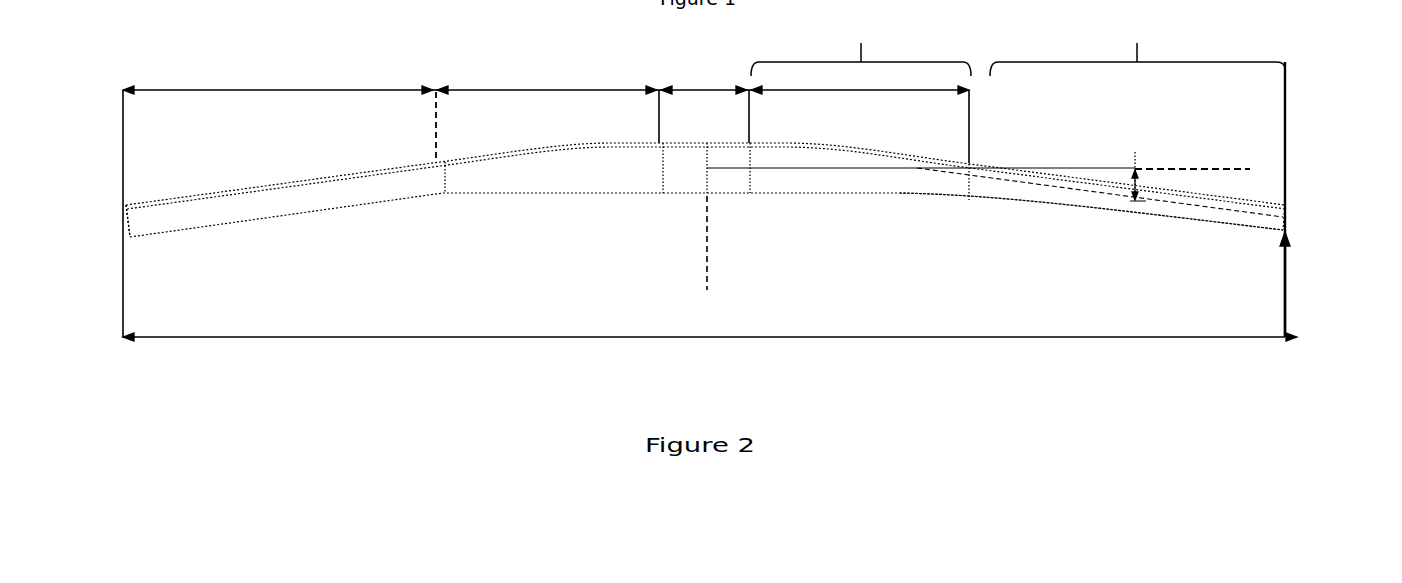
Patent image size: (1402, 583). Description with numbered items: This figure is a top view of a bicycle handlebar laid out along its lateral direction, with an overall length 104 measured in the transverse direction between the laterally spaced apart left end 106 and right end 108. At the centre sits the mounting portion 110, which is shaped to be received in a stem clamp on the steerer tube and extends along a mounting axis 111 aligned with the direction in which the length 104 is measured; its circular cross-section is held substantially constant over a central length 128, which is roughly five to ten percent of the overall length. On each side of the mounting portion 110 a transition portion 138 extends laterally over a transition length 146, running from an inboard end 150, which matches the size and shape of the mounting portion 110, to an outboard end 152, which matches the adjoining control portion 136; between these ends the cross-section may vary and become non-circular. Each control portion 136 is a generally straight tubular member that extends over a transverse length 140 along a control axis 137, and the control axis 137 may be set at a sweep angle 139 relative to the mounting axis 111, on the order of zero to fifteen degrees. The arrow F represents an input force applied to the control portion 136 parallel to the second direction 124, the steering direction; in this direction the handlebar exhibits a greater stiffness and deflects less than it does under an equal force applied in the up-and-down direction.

The length 104 is at (448, 337).
The end 106 is at (118, 228).
The end 108 is at (1290, 162).
The mounting portion 110 is at (660, 202).
The mounting axis 111 is at (1008, 169).
The second direction 124 is at (707, 257).
The length 128 is at (707, 90).
The control portion 136 is at (277, 230).
The control axis 137 is at (1085, 195).
The transition portion 138 is at (497, 202).
The sweep angle 139 is at (1135, 153).
The transverse length 140 is at (314, 90).
The transition length 146 is at (565, 90).
The inboard end 150 is at (753, 202).
The outboard end 152 is at (963, 200).
The arrow F is at (1285, 303).